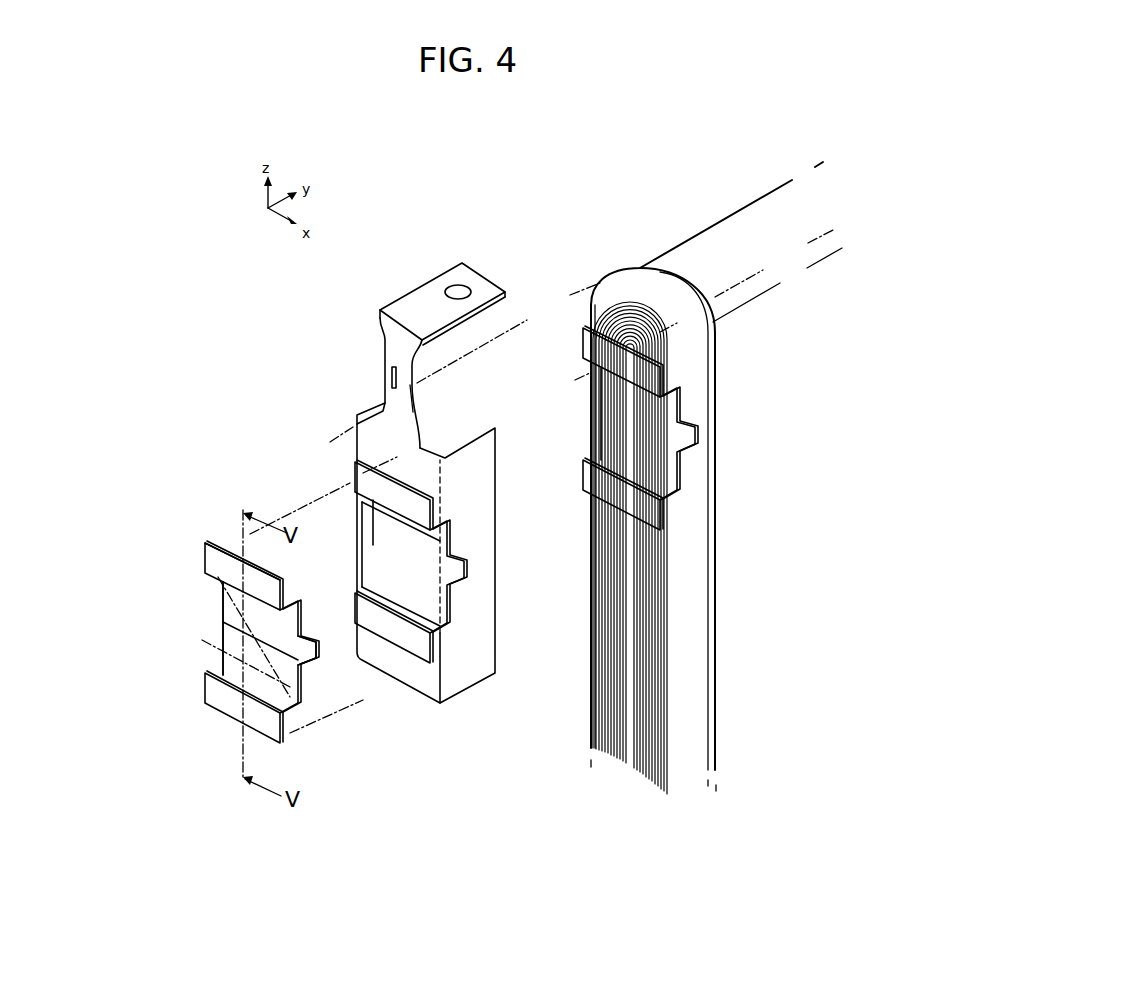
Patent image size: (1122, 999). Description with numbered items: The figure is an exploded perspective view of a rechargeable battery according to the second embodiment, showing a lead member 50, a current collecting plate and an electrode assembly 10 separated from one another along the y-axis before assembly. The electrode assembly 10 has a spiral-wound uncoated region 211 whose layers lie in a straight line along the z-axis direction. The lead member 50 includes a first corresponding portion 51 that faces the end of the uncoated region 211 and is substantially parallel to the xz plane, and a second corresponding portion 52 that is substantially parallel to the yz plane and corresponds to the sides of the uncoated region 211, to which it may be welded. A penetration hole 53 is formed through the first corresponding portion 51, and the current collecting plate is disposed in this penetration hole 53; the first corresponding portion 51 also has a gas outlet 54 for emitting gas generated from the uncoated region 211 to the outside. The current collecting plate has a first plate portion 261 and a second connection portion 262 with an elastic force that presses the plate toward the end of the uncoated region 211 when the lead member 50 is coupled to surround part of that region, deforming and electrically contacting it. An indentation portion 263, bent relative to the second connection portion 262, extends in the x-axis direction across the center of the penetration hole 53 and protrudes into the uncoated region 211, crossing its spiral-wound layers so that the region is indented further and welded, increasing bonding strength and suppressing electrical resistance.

The electrode assembly 10 is at (712, 198).
The uncoated region 211 is at (637, 293).
The first plate portion of clip 261 is at (212, 568).
The second connection portion 262 is at (232, 628).
The indentation portion 263 is at (318, 650).
The lead member 50 is at (348, 409).
The first corresponding portion 51 is at (420, 698).
The second corresponding portion 52 is at (473, 670).
The penetration hole 53 is at (362, 556).
The gas outlet 54 is at (391, 380).